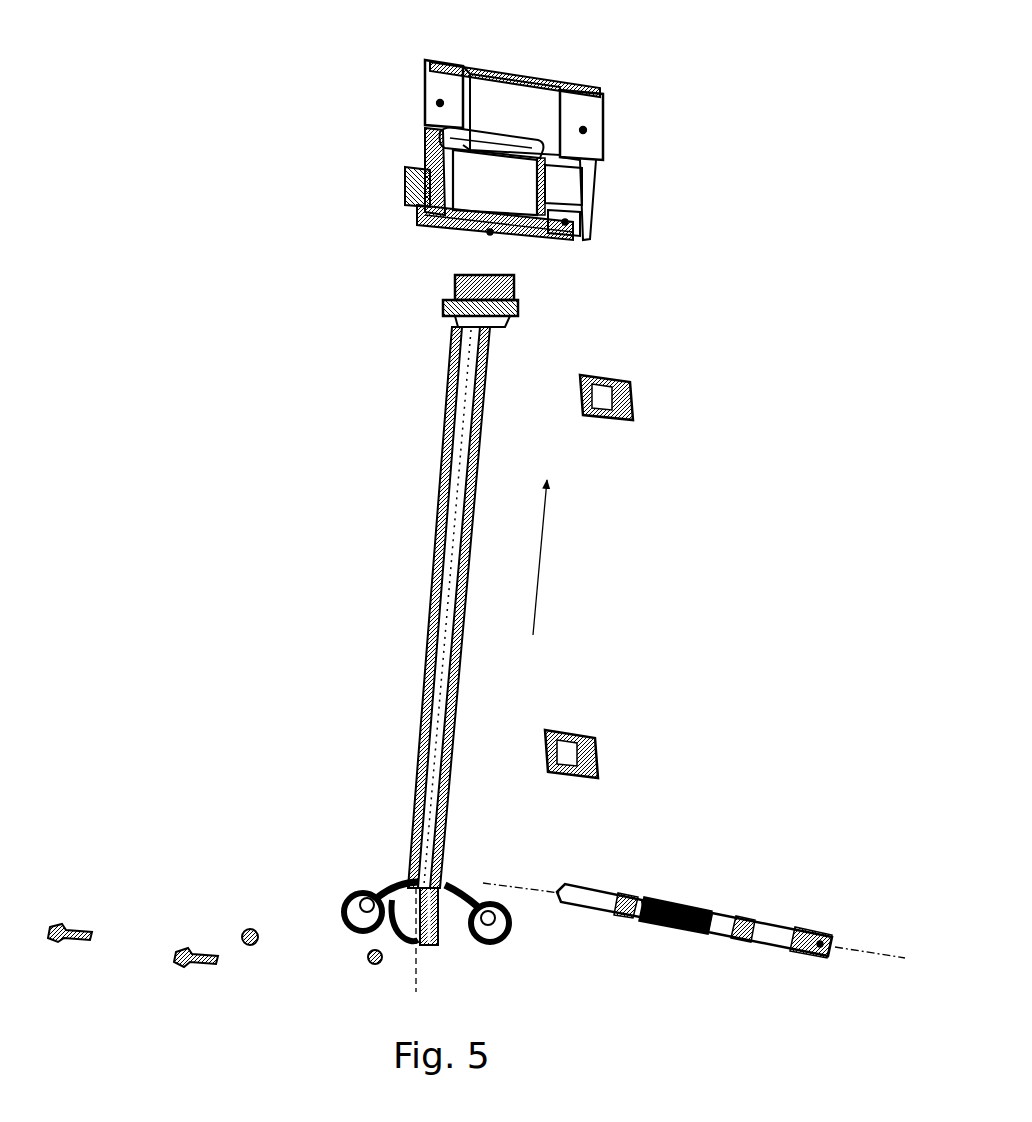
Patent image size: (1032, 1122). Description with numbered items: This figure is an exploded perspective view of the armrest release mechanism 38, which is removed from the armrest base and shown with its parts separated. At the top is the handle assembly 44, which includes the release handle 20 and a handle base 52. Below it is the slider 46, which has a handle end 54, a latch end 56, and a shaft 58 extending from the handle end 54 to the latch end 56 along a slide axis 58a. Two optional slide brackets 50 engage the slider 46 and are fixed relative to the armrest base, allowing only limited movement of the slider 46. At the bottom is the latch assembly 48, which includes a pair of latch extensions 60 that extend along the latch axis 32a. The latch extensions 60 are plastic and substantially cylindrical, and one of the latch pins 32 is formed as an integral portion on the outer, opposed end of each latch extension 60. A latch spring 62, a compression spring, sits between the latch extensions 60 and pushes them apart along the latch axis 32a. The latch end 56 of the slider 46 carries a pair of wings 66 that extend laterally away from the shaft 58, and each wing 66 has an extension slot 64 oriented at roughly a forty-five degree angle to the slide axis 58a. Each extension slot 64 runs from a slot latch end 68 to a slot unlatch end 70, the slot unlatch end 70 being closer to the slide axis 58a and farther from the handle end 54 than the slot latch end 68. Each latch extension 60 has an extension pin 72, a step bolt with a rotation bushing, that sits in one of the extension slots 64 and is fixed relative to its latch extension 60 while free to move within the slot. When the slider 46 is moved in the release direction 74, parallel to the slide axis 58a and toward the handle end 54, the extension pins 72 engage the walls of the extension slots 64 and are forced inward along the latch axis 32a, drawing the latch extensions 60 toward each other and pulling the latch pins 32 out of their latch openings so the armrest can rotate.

The release handle 20 is at (470, 183).
The latch pin 32 is at (560, 893).
The latch axis 32a is at (850, 960).
The armrest release mechanism 38 is at (715, 70).
The handle assembly 44 is at (387, 97).
The slider 46 is at (418, 455).
The latch assembly 48 is at (228, 803).
The slide bracket 50 is at (625, 385).
The handle base 52 is at (420, 192).
The handle end 54 is at (497, 297).
The latch end 56 is at (413, 873).
The shaft 58 is at (448, 530).
The slide axis 58a is at (416, 967).
The latch extension 60 is at (618, 887).
The latch spring 62 is at (673, 923).
The extension slot 64 is at (463, 917).
The wing 66 is at (383, 878).
The slot latch end 68 is at (347, 878).
The slot unlatch end 70 is at (487, 915).
The extension pin 72 is at (133, 907).
The release direction 74 is at (540, 572).